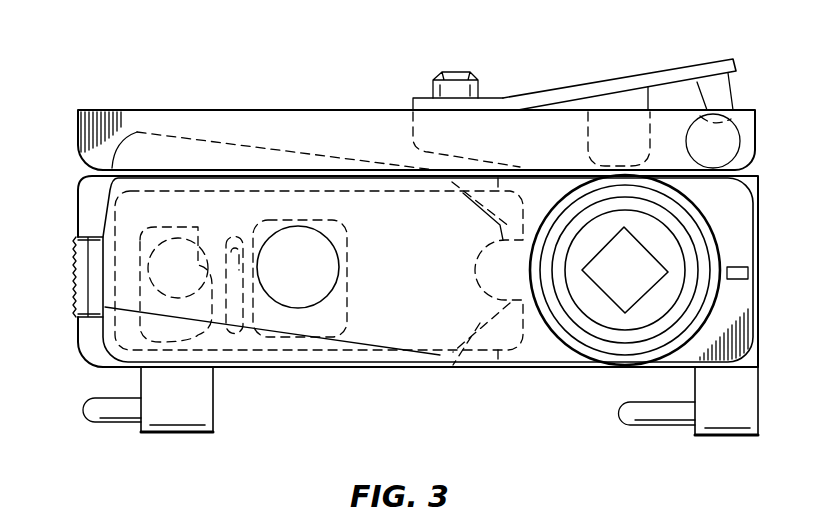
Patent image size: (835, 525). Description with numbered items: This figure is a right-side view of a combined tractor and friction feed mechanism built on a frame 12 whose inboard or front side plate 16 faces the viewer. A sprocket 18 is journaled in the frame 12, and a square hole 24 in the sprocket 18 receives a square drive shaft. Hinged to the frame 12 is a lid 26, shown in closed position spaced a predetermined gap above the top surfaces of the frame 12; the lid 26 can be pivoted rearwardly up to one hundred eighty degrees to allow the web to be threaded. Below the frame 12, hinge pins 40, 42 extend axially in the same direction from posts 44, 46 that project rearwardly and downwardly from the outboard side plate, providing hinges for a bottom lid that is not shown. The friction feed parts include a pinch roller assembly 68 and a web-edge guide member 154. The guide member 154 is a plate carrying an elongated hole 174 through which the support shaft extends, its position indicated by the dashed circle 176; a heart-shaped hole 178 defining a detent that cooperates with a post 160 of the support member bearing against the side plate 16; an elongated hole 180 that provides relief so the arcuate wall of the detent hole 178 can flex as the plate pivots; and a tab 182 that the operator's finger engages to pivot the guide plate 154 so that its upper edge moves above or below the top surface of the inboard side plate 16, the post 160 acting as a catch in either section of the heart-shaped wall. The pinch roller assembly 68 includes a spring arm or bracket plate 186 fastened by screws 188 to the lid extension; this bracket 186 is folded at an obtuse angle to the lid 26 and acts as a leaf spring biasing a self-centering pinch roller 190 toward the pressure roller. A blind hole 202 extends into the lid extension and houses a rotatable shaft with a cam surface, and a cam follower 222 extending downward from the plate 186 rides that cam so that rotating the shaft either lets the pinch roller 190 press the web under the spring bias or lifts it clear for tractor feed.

The frame 12 is at (366, 376).
The inboard side plate 16 is at (248, 367).
The sprocket 18 is at (612, 362).
The square hole 24 is at (655, 287).
The lid 26 is at (268, 110).
The hinge pin 40 is at (100, 424).
The hinge pin 42 is at (624, 408).
The post 44 is at (216, 418).
The post 46 is at (760, 404).
The pinch roller assembly 68 is at (575, 89).
The web-edge guide member 154 is at (132, 127).
The post 160 is at (181, 247).
The elongated hole 174 is at (350, 288).
The dashed circle 176 is at (325, 237).
The heart-shaped hole 178 is at (167, 271).
The elongated hole 180 is at (236, 268).
The tab 182 is at (74, 283).
The spring arm 186 is at (645, 70).
The screw 188 is at (435, 78).
The pinch roller 190 is at (590, 158).
The blind hole 202 is at (700, 162).
The cam follower 222 is at (725, 97).